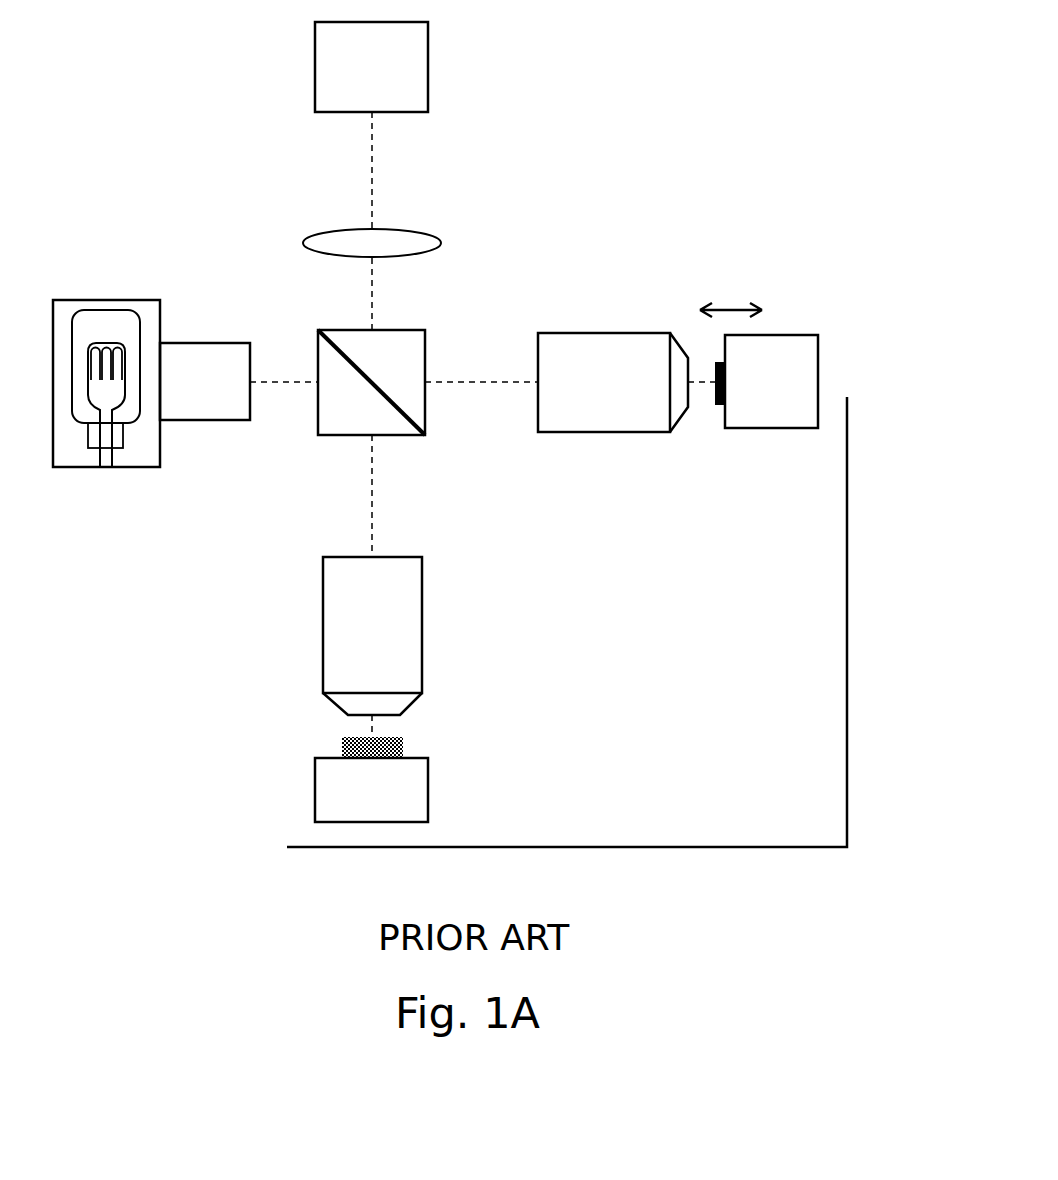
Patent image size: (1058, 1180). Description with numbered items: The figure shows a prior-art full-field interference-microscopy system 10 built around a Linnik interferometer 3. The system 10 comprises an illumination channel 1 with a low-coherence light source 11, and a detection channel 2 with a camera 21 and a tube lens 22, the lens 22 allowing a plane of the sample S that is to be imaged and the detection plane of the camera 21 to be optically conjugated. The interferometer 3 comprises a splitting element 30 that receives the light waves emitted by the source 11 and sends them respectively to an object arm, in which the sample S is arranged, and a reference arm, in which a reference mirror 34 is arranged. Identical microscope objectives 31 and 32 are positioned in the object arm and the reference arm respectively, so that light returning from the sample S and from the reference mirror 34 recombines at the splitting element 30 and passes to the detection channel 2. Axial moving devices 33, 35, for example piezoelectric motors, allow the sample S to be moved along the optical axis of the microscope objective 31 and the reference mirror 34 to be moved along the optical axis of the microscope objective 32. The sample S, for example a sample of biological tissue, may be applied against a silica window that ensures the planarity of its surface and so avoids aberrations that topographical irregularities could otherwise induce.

The interference-microscopy system 10 is at (787, 27).
The illumination channel 1 is at (151, 361).
The low-coherence light source 11 is at (92, 467).
The detection channel 2 is at (438, 139).
The camera 21 is at (428, 63).
The lens 22 is at (410, 231).
The splitting element 30 is at (412, 330).
The interferometer 3 is at (850, 700).
The microscope objective 31 is at (323, 645).
The microscope objective 32 is at (592, 333).
The axial moving device 33 is at (428, 795).
The reference mirror 34 is at (716, 405).
The axial moving device 35 is at (797, 335).
The sample S is at (403, 745).